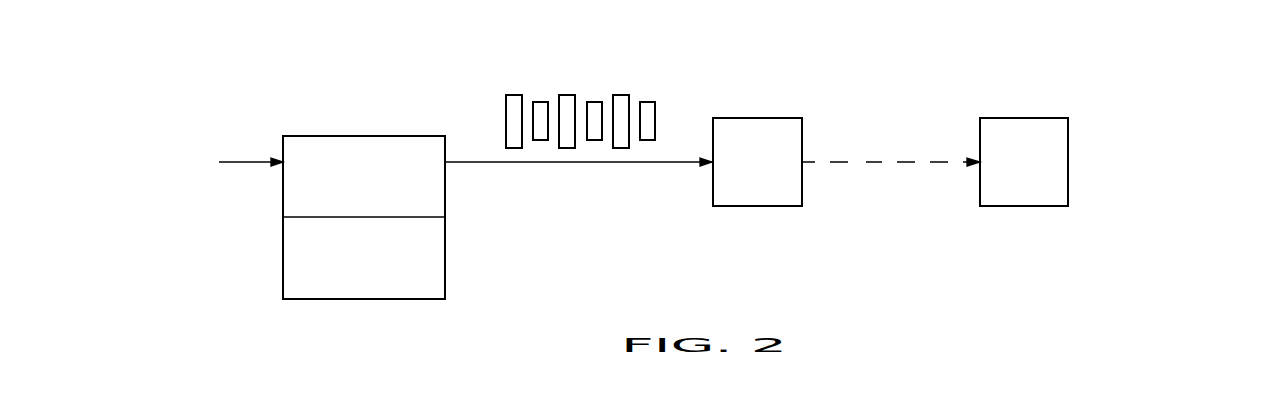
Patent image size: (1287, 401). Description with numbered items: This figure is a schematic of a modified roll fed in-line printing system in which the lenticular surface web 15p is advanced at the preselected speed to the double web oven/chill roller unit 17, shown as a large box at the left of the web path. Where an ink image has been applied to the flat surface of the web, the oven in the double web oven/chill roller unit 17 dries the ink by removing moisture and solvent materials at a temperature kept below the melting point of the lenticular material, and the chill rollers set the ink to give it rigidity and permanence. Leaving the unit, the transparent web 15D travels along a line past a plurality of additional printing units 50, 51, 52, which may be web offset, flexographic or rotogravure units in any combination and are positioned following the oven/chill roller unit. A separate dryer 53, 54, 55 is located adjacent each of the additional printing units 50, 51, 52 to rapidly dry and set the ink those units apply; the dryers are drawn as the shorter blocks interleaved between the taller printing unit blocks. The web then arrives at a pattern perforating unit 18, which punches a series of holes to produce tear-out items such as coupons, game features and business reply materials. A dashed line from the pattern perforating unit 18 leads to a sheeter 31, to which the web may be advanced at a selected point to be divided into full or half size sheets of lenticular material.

The lenticular surface web 15p is at (240, 162).
The double web oven/chill roller unit 17 is at (363, 136).
The dried transparent web 15D is at (478, 162).
The additional printing unit 50 is at (514, 148).
The additional printing unit 51 is at (567, 148).
The additional printing unit 52 is at (621, 148).
The dryer 53 is at (541, 102).
The dryer 54 is at (594, 102).
The dryer 55 is at (648, 102).
The pattern perforating unit 18 is at (778, 118).
The sheeter 31 is at (1068, 162).